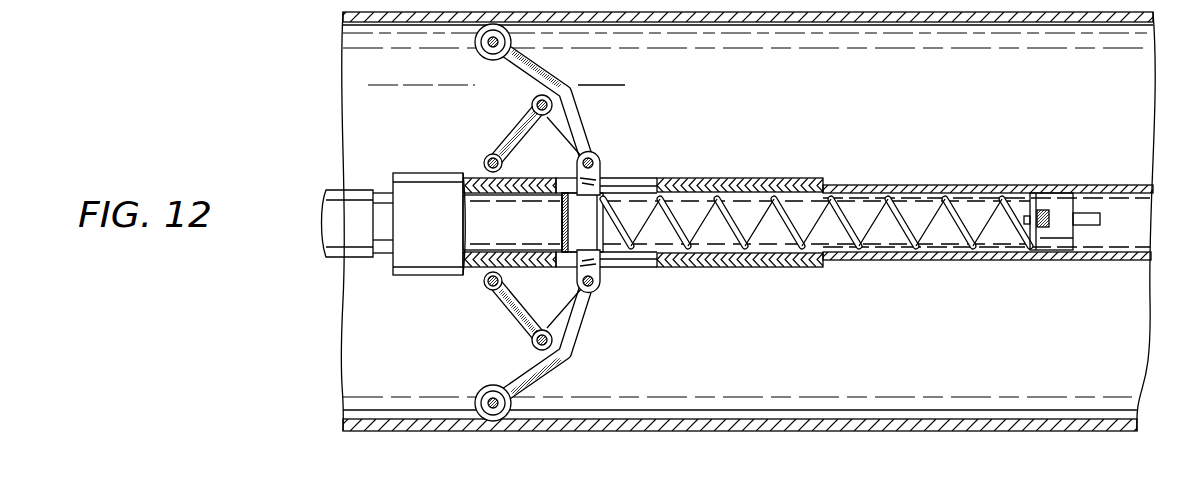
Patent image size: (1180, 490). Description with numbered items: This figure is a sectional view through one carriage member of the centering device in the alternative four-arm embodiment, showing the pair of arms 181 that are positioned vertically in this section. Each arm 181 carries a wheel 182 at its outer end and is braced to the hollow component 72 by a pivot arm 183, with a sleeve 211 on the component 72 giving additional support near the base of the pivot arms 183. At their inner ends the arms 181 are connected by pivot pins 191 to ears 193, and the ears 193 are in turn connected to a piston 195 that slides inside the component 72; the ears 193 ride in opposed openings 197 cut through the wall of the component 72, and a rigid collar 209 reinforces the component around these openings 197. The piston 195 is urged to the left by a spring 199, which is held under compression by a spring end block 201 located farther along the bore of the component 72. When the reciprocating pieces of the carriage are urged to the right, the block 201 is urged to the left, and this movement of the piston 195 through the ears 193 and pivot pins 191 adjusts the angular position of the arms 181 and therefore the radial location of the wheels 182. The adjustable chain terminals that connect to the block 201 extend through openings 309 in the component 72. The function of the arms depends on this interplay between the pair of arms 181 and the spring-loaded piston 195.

The hollow component 72 is at (411, 185).
The arms 181 is at (580, 100).
The wheels 182 is at (488, 56).
The pivot arms 183 is at (503, 130).
The pivot pins 191 is at (598, 160).
The ears 193 is at (578, 170).
The piston 195 is at (570, 220).
The opposed openings 197 is at (628, 184).
The spring 199 is at (868, 200).
The spring end block 201 is at (1075, 238).
The rigid collar 209 is at (782, 152).
The sleeve 211 is at (468, 174).
The openings 309 is at (1095, 206).